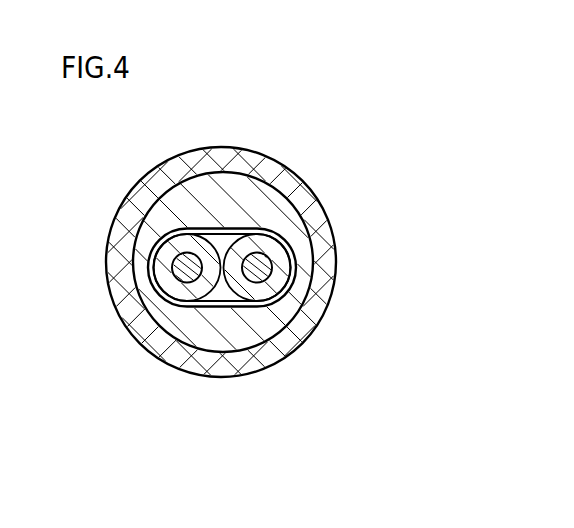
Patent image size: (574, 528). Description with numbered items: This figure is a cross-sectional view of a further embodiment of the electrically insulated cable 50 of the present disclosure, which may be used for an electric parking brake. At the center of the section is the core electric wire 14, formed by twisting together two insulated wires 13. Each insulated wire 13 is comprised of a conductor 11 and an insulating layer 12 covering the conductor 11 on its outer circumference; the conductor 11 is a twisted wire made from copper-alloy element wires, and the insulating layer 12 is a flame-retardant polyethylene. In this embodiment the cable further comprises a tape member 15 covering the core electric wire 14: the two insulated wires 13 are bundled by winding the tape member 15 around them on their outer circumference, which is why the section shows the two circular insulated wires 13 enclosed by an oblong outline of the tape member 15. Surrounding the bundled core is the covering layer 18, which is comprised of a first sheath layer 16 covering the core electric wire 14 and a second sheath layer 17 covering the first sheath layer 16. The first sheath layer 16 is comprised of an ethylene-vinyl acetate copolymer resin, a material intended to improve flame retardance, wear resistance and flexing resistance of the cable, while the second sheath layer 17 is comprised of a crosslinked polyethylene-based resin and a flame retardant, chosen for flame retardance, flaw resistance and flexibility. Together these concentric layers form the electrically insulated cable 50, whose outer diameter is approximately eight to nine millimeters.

The electrically insulated cable 50 is at (311, 156).
The covering layer 18 is at (397, 182).
The second sheath layer 17 is at (293, 192).
The first sheath layer 16 is at (288, 228).
The tape member 15 is at (297, 264).
The core electric wire 14 is at (160, 453).
The insulated wire 13 is at (202, 418).
The insulating layer 12 is at (172, 290).
The conductor 11 is at (188, 271).